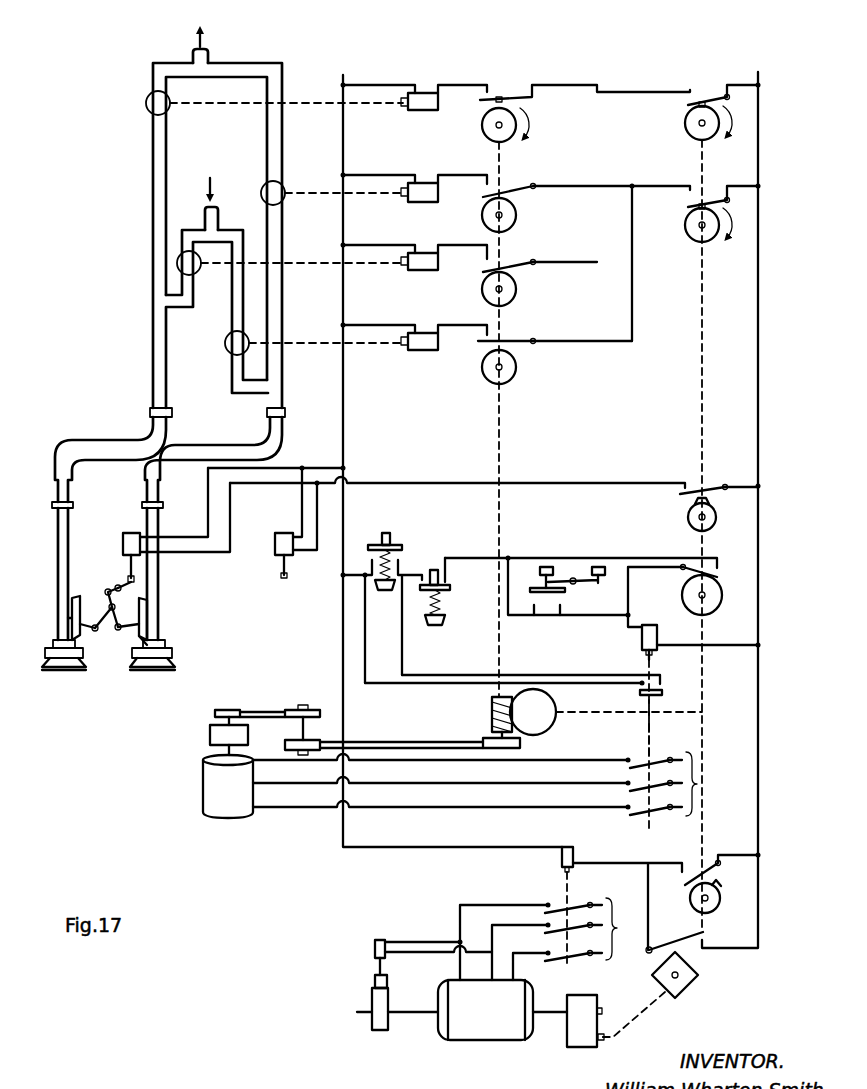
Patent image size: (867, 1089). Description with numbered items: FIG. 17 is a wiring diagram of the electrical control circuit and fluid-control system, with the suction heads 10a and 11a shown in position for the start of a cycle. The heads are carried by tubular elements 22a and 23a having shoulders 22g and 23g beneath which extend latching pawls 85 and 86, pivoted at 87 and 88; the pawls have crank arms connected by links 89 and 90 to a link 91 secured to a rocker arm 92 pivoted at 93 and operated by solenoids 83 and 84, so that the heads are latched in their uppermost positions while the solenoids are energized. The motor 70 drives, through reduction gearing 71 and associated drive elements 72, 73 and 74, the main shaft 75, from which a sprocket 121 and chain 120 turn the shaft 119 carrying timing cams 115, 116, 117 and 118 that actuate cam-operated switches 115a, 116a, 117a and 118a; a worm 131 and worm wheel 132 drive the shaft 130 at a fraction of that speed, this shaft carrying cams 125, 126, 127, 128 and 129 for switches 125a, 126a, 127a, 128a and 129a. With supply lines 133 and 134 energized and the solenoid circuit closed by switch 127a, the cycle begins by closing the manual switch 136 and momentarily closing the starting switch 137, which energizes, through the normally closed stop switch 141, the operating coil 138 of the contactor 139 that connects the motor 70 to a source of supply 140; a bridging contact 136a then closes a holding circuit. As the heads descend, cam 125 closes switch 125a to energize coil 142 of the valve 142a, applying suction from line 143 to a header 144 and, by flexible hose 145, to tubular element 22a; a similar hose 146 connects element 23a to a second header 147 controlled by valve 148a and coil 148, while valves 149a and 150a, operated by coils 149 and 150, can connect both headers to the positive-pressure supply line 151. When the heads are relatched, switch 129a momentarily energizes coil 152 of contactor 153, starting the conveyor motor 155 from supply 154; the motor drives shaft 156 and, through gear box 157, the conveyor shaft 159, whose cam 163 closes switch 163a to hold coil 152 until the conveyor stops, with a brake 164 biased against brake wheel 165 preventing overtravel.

The suction head 10a is at (62, 672).
The suction head 11a is at (160, 672).
The tubular element 22a is at (58, 548).
The shoulder 22g is at (68, 618).
The tubular element 23a is at (160, 578).
The shoulder 23g is at (142, 650).
The operating motor 70 is at (205, 805).
The reduction gearing 71 is at (210, 735).
The belt 72 is at (245, 712).
The pulley 73 is at (230, 710).
The pulley 74 is at (312, 710).
The main shaft 75 is at (312, 740).
The solenoid 83 is at (275, 555).
The solenoid 84 is at (130, 537).
The latching pawl 85 is at (72, 630).
The latching pawl 86 is at (145, 635).
The pivot 87 is at (72, 600).
The pivot 88 is at (145, 608).
The link 89 is at (95, 632).
The link 90 is at (116, 630).
The link 91 is at (106, 592).
The rocker arm 92 is at (128, 576).
The pivot 93 is at (122, 590).
The timing cam 115 is at (482, 125).
The cam switch 115a is at (490, 97).
The timing cam 116 is at (510, 222).
The cam switch 116a is at (505, 195).
The timing cam 117 is at (482, 289).
The cam switch 117a is at (525, 270).
The timing cam 118 is at (512, 374).
The cam switch 118a is at (520, 330).
The cam shaft 119 is at (497, 443).
The chain 120 is at (400, 744).
The sprocket 121 is at (300, 742).
The cam 125 is at (686, 123).
The cam-actuated switch 125a is at (700, 100).
The cam 126 is at (688, 235).
The cam switch 126a is at (703, 205).
The cam 127 is at (710, 527).
The cam-operated switch 127a is at (680, 491).
The cam 128 is at (712, 613).
The cam switch 128a is at (690, 578).
The cam 129 is at (718, 906).
The cam-operated switch 129a is at (695, 880).
The cam shaft 130 is at (700, 372).
The worm 131 is at (492, 710).
The worm wheel 132 is at (552, 702).
The supply line 133 is at (343, 428).
The supply line 134 is at (758, 380).
The manually operable switch 136 is at (575, 590).
The bridging contact 136a is at (662, 692).
The starting switch 137 is at (398, 545).
The operating coil 138 is at (642, 638).
The contactor 139 is at (650, 728).
The source of supply 140 is at (698, 785).
The stop switch 141 is at (450, 587).
The operating coil 142 is at (420, 110).
The valve 142a is at (146, 103).
The suction line 143 is at (193, 55).
The header 144 is at (152, 258).
The flexible hose 145 is at (95, 443).
The flexible hose 146 is at (215, 452).
The second header 147 is at (275, 372).
The coil 148 is at (425, 202).
The valve 148a is at (283, 200).
The coil 149 is at (422, 270).
The valve 149a is at (196, 275).
The coil 150 is at (425, 350).
The valve 150a is at (228, 352).
The supply line 151 is at (213, 207).
The operating coil 152 is at (560, 853).
The contactor 153 is at (572, 893).
The source of supply 154 is at (618, 930).
The conveyor motor 155 is at (455, 1030).
The shaft 156 is at (405, 1006).
The gear box 157 is at (580, 1050).
The conveyor shaft 159 is at (640, 1020).
The cam 163 is at (690, 990).
The cam-operated switch 163a is at (685, 945).
The solenoid 164 is at (375, 980).
The brake wheel 165 is at (375, 1025).